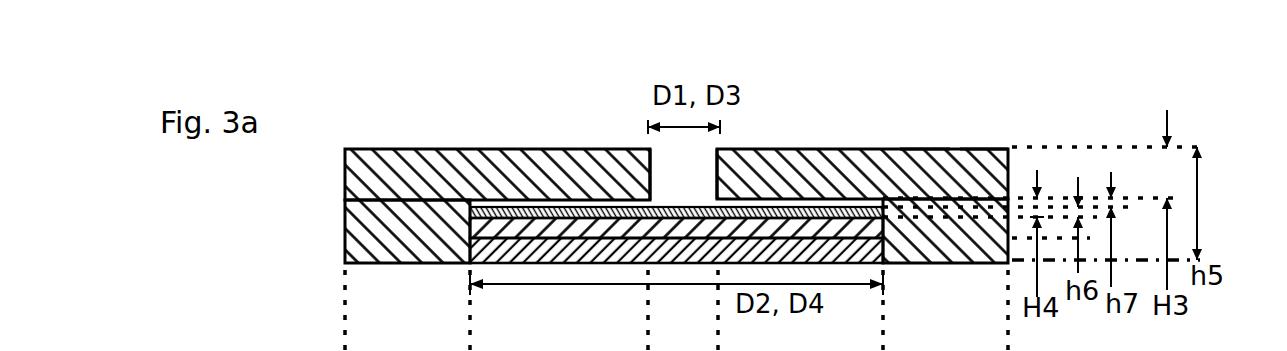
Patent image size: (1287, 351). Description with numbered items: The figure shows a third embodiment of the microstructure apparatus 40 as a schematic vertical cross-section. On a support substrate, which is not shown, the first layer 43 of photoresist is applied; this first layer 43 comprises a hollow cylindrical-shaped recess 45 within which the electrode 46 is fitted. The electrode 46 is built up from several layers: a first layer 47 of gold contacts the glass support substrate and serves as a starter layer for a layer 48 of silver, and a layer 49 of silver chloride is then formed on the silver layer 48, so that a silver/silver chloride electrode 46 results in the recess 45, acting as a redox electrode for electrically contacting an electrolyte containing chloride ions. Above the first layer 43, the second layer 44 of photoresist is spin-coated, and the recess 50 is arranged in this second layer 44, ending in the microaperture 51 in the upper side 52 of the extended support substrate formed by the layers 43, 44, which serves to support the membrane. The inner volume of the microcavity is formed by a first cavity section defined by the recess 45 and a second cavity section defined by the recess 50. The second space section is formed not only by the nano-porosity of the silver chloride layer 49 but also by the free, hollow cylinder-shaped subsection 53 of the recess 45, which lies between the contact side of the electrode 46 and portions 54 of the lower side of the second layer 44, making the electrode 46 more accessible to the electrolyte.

The microstructure apparatus 40 is at (258, 208).
The first layer 43 is at (345, 240).
The second layer 44 is at (345, 170).
The recess 45 is at (883, 212).
The electrode 46 is at (822, 200).
The first layer of gold 47 is at (497, 248).
The layer of silver 48 is at (517, 230).
The layer of silver chloride 49 is at (563, 213).
The recess 50 is at (708, 157).
The microaperture 51 is at (648, 147).
The upper side 52 is at (973, 148).
The free hollow cylinder-shaped subsection 53 is at (925, 148).
The portions of the lower side of the second layer 54 is at (758, 202).